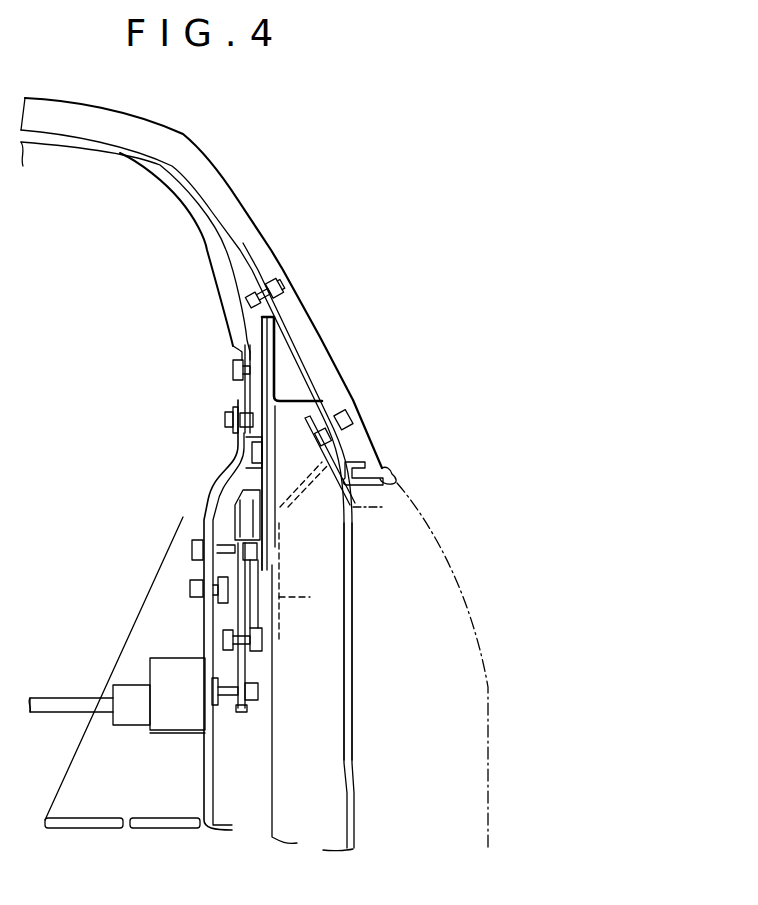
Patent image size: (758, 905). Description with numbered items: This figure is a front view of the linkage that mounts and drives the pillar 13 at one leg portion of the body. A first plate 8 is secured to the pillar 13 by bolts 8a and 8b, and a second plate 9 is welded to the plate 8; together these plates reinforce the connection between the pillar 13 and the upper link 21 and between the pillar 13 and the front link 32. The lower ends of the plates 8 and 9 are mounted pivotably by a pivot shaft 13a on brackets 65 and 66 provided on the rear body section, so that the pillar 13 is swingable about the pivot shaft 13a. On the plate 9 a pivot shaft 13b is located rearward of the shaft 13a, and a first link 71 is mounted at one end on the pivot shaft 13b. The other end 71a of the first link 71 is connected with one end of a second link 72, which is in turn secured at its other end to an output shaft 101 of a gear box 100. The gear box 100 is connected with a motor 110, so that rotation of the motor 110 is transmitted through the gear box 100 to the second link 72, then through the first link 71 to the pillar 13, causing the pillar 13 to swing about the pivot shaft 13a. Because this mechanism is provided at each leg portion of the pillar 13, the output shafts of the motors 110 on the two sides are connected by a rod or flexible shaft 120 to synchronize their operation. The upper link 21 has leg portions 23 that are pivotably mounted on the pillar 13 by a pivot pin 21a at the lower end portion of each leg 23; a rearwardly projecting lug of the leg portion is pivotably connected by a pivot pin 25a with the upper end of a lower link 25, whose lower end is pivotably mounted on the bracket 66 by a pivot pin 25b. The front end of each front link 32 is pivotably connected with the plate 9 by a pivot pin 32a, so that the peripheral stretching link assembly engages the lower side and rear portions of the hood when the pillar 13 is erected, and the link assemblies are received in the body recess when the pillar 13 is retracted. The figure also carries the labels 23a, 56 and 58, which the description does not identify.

The pillar 13 is at (247, 210).
The upper link 21 is at (222, 260).
The pivot pin 21a is at (220, 357).
The first plate 8 is at (292, 393).
The bolt 8a is at (267, 282).
The bolt 8b is at (350, 420).
The second plate 9 is at (308, 414).
The leg portion 23 is at (232, 368).
The nut 23a is at (240, 402).
The lower link 25 is at (218, 488).
The pivot pin 25a is at (230, 423).
The pivot pin 25b is at (195, 590).
The front link 32 is at (270, 428).
The pivot pin 32a is at (250, 452).
The pivot shaft 13a is at (227, 550).
The pivot shaft 13b is at (227, 510).
The first link 71 is at (253, 578).
The other end of first link 71a is at (263, 645).
The output shaft 101 is at (258, 692).
The second link 72 is at (242, 710).
The bracket 65 is at (283, 548).
The door 56 is at (470, 600).
The pillar 58 is at (353, 672).
The bracket 66 is at (128, 660).
The rod or flexible shaft 120 is at (50, 698).
The motor 110 is at (118, 725).
The gear box 100 is at (167, 733).